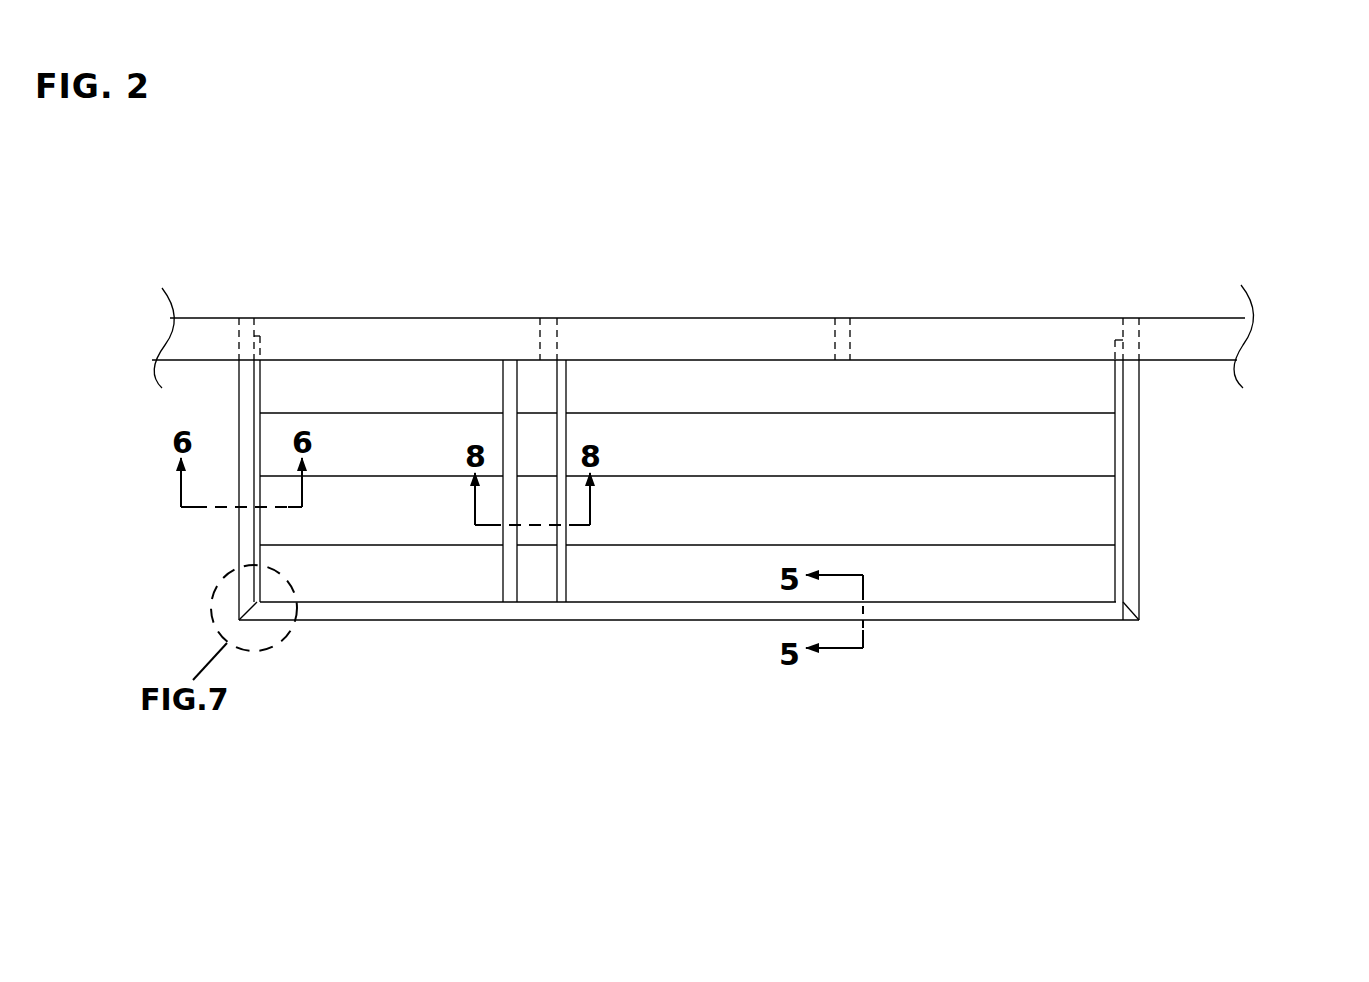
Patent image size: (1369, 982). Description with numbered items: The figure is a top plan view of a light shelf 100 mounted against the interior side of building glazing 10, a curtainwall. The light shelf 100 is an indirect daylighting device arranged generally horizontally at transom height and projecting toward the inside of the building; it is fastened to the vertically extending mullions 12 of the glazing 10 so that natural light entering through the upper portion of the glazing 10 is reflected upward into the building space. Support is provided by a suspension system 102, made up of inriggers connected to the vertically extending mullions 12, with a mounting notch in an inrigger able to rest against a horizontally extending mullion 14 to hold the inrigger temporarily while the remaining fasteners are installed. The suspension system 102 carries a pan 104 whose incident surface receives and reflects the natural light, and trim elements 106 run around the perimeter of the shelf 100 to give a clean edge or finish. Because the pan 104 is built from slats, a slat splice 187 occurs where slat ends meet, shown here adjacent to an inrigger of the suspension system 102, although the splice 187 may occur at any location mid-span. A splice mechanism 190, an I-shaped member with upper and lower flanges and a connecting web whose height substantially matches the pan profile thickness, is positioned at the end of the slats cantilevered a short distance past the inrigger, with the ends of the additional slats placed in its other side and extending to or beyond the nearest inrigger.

The glazing 10 is at (682, 315).
The mullions 12 is at (852, 337).
The horizontally extending mullion 14 is at (1012, 338).
The light shelf 100 is at (1180, 506).
The suspension system 102 is at (264, 384).
The pan 104 is at (415, 520).
The trim elements 106 is at (236, 539).
The slat splice 187 is at (503, 333).
The splice mechanism 190 is at (507, 458).